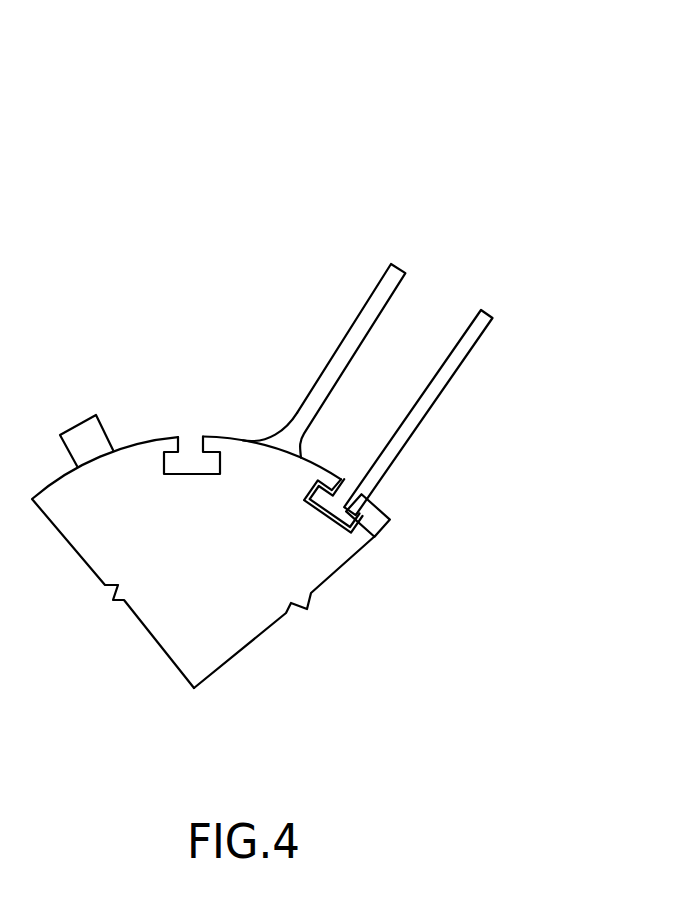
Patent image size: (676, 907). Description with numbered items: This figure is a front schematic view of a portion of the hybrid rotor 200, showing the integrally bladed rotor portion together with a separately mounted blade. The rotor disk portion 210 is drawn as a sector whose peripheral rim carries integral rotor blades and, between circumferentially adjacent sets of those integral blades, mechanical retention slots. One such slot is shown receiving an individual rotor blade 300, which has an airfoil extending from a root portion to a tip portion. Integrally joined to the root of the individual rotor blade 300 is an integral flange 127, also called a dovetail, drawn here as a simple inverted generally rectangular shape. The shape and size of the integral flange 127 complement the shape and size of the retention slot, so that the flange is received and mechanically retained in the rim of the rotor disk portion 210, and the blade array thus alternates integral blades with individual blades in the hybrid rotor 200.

The hybrid rotor 200 is at (395, 127).
The rotor disk portion 210 is at (218, 586).
The individual rotor blade 300 is at (488, 310).
The integral flange 127 is at (347, 513).